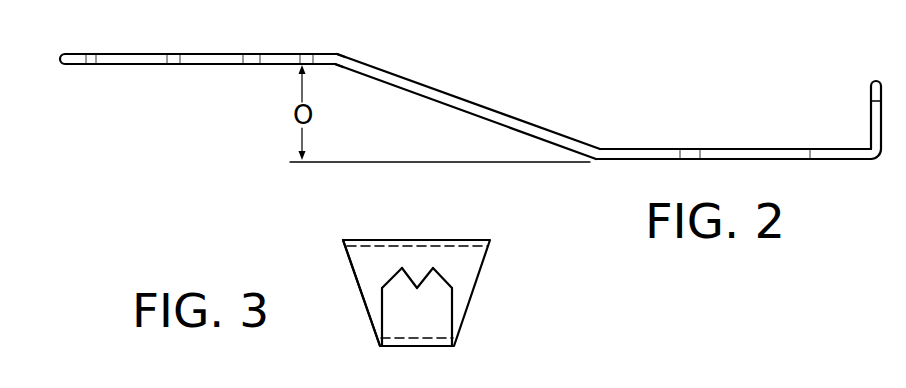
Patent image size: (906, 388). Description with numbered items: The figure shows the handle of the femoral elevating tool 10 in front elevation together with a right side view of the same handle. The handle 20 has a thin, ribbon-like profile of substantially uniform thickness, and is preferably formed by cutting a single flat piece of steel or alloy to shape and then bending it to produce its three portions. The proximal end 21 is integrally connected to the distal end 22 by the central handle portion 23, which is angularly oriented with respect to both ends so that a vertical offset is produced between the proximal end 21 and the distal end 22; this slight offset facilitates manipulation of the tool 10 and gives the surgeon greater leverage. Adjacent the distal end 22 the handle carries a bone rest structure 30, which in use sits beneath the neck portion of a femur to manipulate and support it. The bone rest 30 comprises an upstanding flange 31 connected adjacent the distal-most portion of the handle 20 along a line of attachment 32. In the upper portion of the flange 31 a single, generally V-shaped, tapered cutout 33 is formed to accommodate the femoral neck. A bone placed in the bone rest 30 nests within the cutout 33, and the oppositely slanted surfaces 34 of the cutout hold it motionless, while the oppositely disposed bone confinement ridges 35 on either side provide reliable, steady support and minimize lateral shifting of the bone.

In FIG. 2, the femoral elevating tool 10 is at (470, 107).
In FIG. 2, the handle 20 is at (364, 50).
In FIG. 2, the proximal end 21 is at (138, 64).
In FIG. 3, the proximal end 21 is at (358, 240).
In FIG. 2, the distal end 22 is at (777, 159).
In FIG. 2, the central handle portion 23 is at (457, 100).
In FIG. 3, the central handle portion 23 is at (353, 257).
In FIG. 2, the line of attachment 32 is at (869, 146).
In FIG. 3, the bone rest structure 30 is at (370, 326).
In FIG. 3, the upstanding flange 31 is at (445, 320).
In FIG. 3, the cutout 33 is at (417, 278).
In FIG. 3, the oppositely slanted surfaces 34 is at (401, 266).
In FIG. 3, the bone confinement ridges 35 is at (398, 264).